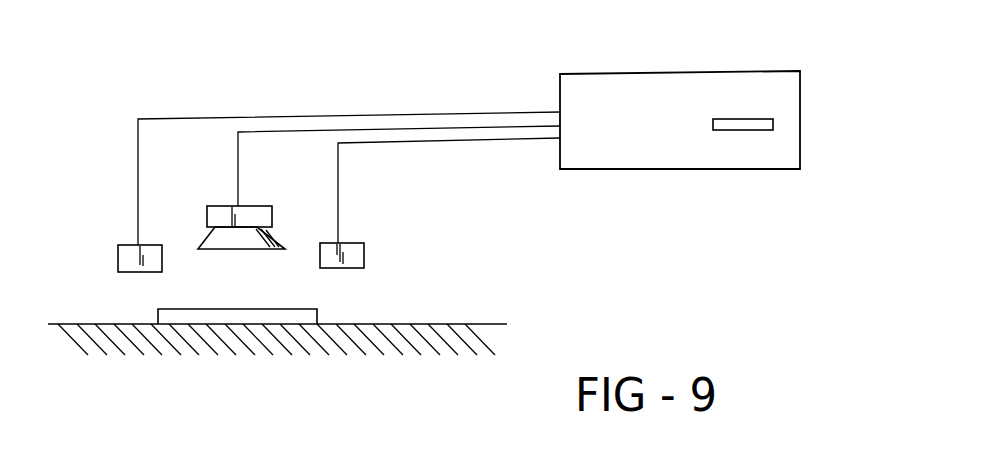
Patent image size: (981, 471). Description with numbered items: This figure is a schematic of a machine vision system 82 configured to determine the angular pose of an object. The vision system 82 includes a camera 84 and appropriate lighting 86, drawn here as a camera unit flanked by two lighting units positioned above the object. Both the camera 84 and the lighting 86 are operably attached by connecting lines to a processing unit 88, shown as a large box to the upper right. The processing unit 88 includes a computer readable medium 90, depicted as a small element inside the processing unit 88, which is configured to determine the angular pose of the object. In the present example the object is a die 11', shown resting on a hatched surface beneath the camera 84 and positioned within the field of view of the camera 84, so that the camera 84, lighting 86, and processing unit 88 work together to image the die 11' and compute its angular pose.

The machine vision system 82 is at (800, 232).
The camera 84 is at (225, 216).
The lighting 86 is at (118, 256).
The processing unit 88 is at (590, 83).
The computer readable medium 90 is at (745, 125).
The die 11' is at (304, 290).